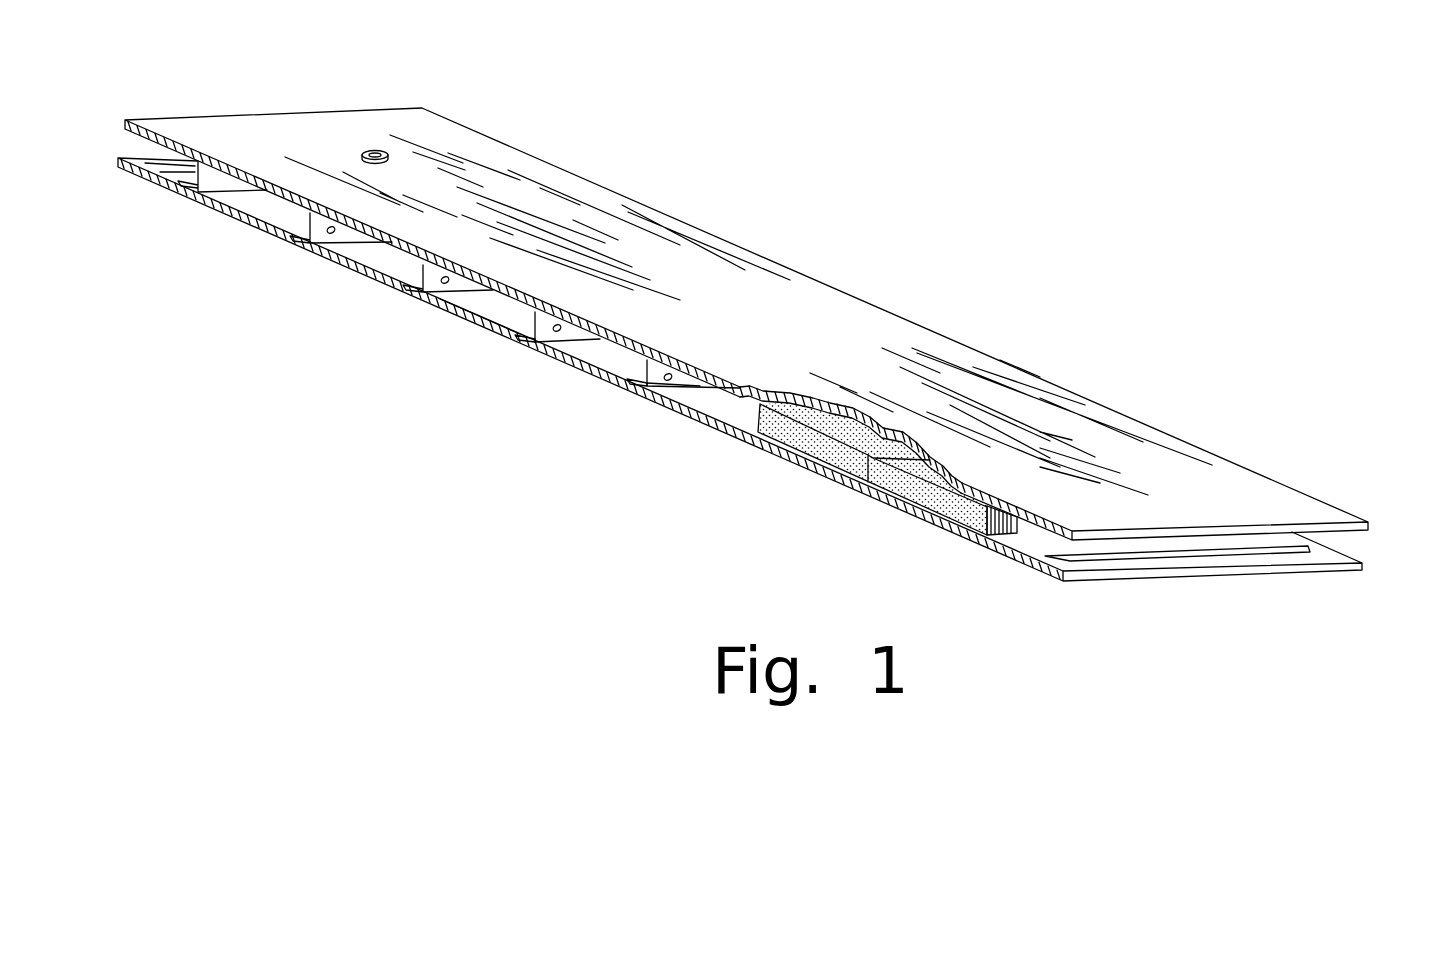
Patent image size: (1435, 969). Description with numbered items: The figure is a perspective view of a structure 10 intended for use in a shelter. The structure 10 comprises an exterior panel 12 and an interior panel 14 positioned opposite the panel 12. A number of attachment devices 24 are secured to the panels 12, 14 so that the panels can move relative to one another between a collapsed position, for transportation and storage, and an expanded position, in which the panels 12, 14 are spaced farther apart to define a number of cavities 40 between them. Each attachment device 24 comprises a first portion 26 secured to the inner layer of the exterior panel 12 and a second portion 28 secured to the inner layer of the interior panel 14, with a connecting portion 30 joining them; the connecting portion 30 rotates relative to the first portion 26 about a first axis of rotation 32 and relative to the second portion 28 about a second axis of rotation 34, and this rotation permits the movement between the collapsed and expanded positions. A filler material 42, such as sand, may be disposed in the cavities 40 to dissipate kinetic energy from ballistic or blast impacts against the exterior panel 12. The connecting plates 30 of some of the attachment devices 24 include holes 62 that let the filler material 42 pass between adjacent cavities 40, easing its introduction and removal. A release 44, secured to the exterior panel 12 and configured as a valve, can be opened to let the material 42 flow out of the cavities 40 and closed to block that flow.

The structure 10 is at (862, 150).
The exterior panel 12 is at (1277, 503).
The interior panel 14 is at (1333, 557).
The attachment device 24 is at (437, 291).
The first portion 26 is at (664, 357).
The second portion 28 is at (624, 374).
The connecting portion 30 is at (653, 388).
The first axis of rotation 32 is at (533, 294).
The second axis of rotation 34 is at (535, 341).
The cavity 40 is at (487, 312).
The filler material 42 is at (903, 512).
The release 44 is at (375, 152).
The hole 62 is at (330, 235).